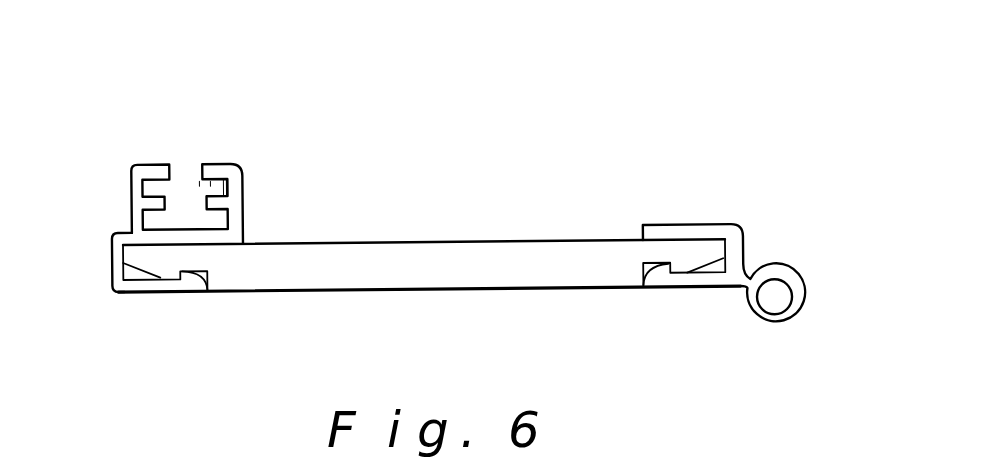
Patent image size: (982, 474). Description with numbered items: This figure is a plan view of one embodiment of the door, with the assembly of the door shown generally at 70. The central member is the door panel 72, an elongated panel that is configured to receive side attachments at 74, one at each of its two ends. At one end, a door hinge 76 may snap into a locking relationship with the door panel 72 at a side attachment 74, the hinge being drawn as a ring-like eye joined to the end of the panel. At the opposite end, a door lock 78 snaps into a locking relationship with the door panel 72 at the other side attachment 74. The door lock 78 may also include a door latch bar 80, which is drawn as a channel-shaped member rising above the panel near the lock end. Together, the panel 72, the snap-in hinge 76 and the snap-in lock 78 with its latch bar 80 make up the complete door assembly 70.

The assembly of the door 70 is at (574, 116).
The door panel 72 is at (383, 242).
The side attachments 74 is at (222, 272).
The door hinge 76 is at (772, 265).
The door lock 78 is at (112, 287).
The door latch bar 80 is at (185, 178).